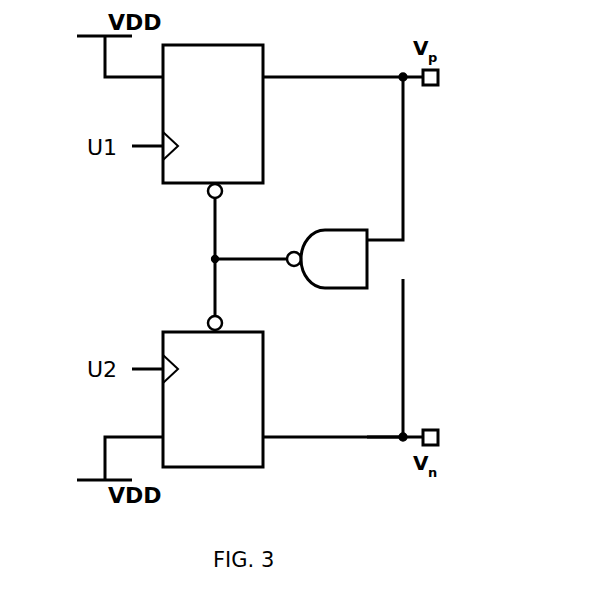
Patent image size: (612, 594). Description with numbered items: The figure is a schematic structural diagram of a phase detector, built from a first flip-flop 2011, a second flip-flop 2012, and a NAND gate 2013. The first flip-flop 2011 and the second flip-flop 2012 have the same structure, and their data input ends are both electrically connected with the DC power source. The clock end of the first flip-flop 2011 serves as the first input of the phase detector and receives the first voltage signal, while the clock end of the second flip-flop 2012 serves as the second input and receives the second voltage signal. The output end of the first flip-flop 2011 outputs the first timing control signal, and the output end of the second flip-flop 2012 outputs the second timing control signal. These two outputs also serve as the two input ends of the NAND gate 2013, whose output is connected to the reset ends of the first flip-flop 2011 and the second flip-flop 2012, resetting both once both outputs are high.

The first flip-flop 2011 is at (263, 145).
The second flip-flop 2012 is at (263, 383).
The NAND gate 2013 is at (353, 214).